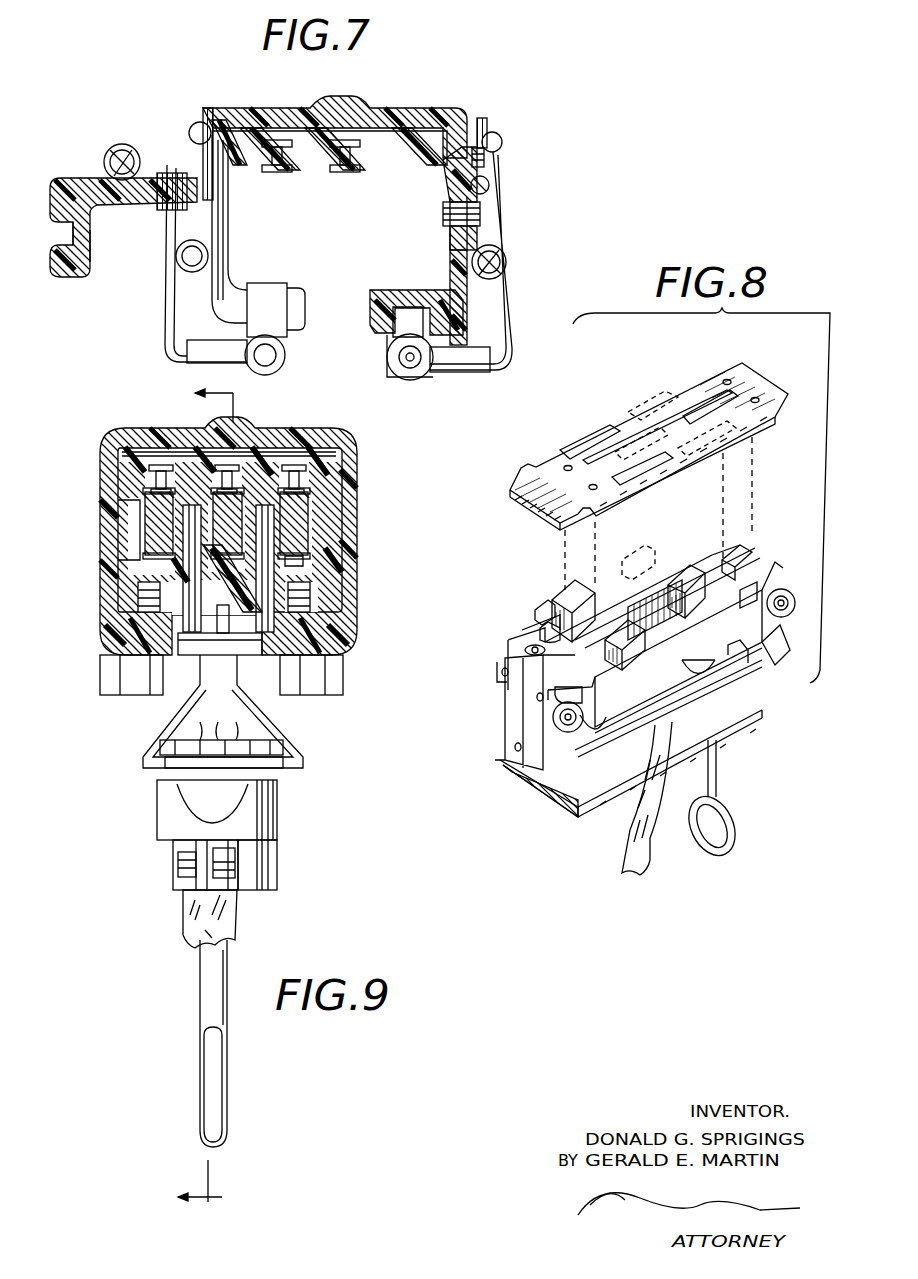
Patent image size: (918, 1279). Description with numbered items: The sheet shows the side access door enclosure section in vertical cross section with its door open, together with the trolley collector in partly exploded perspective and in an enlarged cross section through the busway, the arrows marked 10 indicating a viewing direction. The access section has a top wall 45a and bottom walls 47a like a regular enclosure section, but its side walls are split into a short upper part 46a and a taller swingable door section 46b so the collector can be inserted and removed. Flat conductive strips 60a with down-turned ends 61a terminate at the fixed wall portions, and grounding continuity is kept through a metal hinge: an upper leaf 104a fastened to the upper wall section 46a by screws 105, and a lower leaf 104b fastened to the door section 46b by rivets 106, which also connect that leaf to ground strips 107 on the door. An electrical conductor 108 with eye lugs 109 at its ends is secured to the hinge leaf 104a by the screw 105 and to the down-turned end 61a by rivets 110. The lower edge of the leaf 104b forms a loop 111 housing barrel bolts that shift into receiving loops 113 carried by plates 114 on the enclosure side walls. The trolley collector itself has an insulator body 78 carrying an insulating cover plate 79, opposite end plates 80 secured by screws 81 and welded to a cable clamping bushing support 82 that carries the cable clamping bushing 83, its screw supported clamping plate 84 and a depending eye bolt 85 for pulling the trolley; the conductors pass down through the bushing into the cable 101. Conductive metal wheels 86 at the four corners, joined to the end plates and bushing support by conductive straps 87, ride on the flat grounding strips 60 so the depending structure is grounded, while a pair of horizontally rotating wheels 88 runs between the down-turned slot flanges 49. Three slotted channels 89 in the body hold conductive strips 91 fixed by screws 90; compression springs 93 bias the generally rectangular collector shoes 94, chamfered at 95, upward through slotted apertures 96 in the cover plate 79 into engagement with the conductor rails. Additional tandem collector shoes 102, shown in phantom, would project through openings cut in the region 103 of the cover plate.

In FIG. 9, the section line 10 is at (190, 797).
In FIG. 7, the top wall 45a is at (432, 117).
In FIG. 7, the upper side wall part 46a is at (460, 163).
In FIG. 7, the door section 46b is at (97, 183).
In FIG. 7, the bottom walls 47a is at (78, 234).
In FIG. 9, the down-turned slot defining enclosure flanges 49 is at (188, 632).
In FIG. 9, the flat grounding strips 60 is at (287, 617).
In FIG. 7, the electrically conductive flat strips 60a is at (272, 287).
In FIG. 7, the down-turned ends 61a is at (282, 329).
In FIG. 8, the insulator body 78 is at (522, 630).
In FIG. 9, the insulator body 78 is at (317, 536).
In FIG. 8, the upper insulating cover plate 79 is at (533, 503).
In FIG. 9, the upper insulating cover plate 79 is at (320, 508).
In FIG. 8, the end plates 80 is at (520, 719).
In FIG. 8, the screws 81 is at (500, 677).
In FIG. 8, the cable clamping bushing support 82 is at (584, 810).
In FIG. 9, the cable clamping bushing support 82 is at (290, 759).
In FIG. 9, the cable clamping bushing 83 is at (272, 808).
In FIG. 9, the clamping plate 84 is at (177, 882).
In FIG. 8, the eye bolt 85 is at (730, 808).
In FIG. 9, the eye bolt 85 is at (202, 980).
In FIG. 8, the conductive metal wheels 86 is at (570, 733).
In FIG. 9, the conductive metal wheels 86 is at (150, 593).
In FIG. 8, the conductive straps 87 is at (584, 693).
In FIG. 8, the wheels 88 is at (600, 730).
In FIG. 9, the wheels 88 is at (203, 647).
In FIG. 8, the slotted channels 89 is at (750, 583).
In FIG. 9, the slotted channels 89 is at (147, 518).
In FIG. 8, the screws 90 is at (525, 650).
In FIG. 8, the conductive metal strips 91 is at (545, 624).
In FIG. 9, the conductive metal strips 91 is at (303, 562).
In FIG. 9, the compression springs 93 is at (113, 542).
In FIG. 8, the collector shoes 94 is at (577, 590).
In FIG. 9, the collector shoes 94 is at (220, 515).
In FIG. 8, the chamfered ends 95 is at (548, 600).
In FIG. 8, the slotted apertures 96 is at (588, 440).
In FIG. 8, the cable 101 is at (643, 857).
In FIG. 9, the cable 101 is at (190, 923).
In FIG. 8, the additional collector shoes 102 is at (648, 547).
In FIG. 8, the region 103 is at (645, 410).
In FIG. 7, the upper hinge leaf 104a is at (484, 159).
In FIG. 7, the lower hinge leaf 104b is at (473, 238).
In FIG. 7, the screws 105 is at (488, 139).
In FIG. 7, the rivets 106 is at (166, 197).
In FIG. 7, the grounding strips 107 is at (84, 243).
In FIG. 7, the electrical conductor 108 is at (502, 303).
In FIG. 7, the eye lugs 109 is at (486, 124).
In FIG. 7, the rivets 110 is at (410, 363).
In FIG. 7, the loop 111 is at (128, 150).
In FIG. 7, the receiving loops 113 is at (178, 263).
In FIG. 7, the plates 114 is at (215, 220).